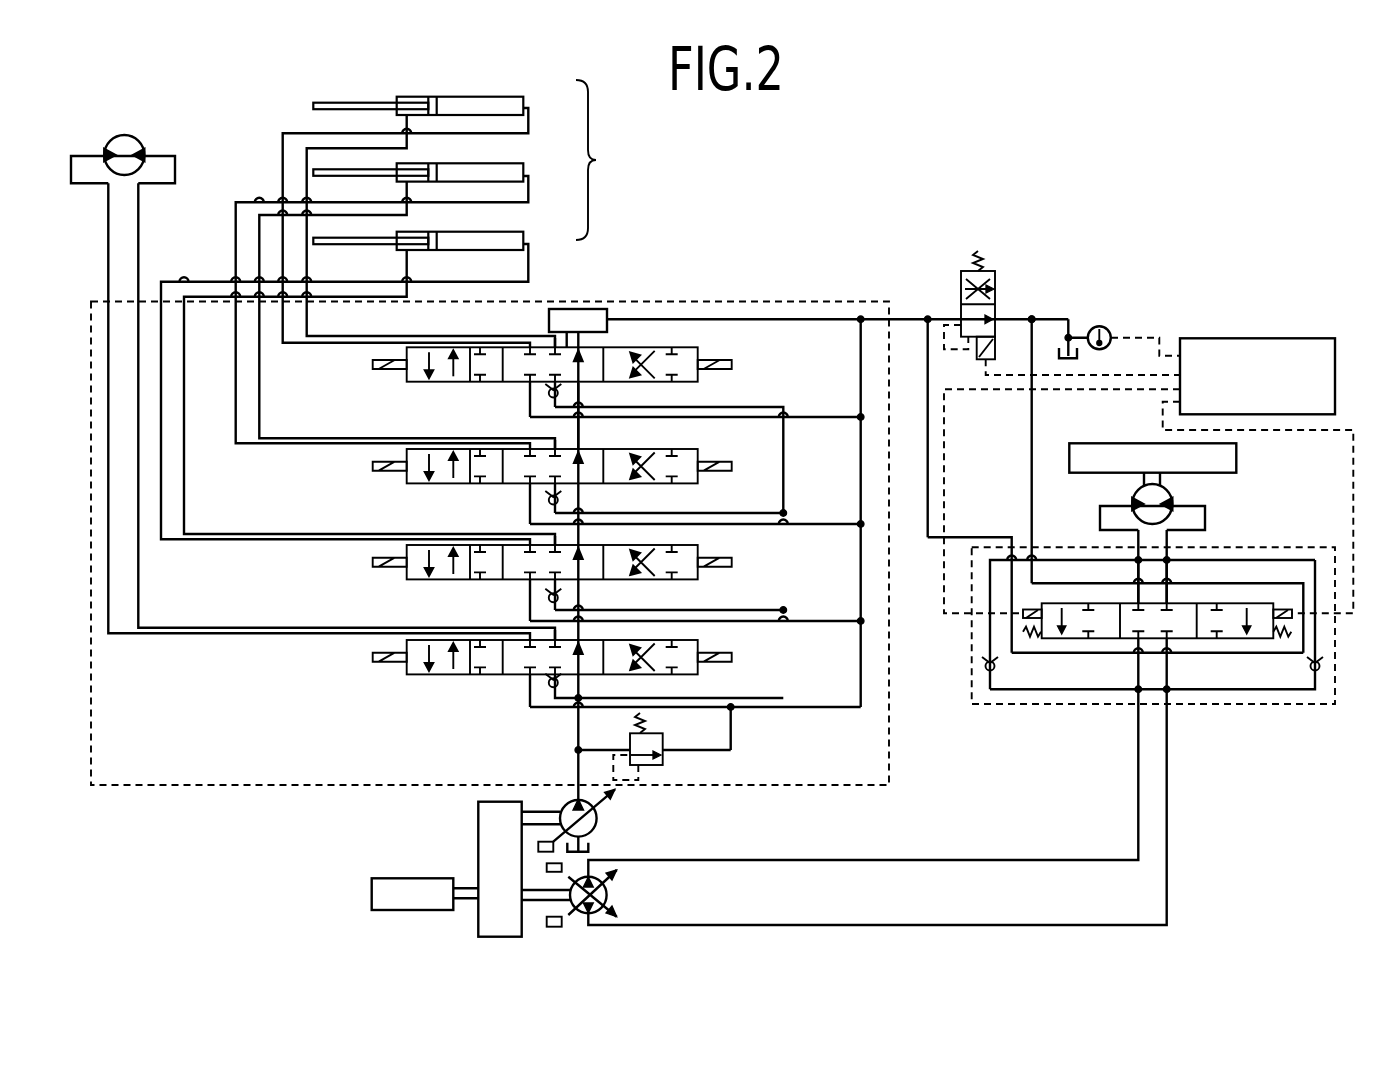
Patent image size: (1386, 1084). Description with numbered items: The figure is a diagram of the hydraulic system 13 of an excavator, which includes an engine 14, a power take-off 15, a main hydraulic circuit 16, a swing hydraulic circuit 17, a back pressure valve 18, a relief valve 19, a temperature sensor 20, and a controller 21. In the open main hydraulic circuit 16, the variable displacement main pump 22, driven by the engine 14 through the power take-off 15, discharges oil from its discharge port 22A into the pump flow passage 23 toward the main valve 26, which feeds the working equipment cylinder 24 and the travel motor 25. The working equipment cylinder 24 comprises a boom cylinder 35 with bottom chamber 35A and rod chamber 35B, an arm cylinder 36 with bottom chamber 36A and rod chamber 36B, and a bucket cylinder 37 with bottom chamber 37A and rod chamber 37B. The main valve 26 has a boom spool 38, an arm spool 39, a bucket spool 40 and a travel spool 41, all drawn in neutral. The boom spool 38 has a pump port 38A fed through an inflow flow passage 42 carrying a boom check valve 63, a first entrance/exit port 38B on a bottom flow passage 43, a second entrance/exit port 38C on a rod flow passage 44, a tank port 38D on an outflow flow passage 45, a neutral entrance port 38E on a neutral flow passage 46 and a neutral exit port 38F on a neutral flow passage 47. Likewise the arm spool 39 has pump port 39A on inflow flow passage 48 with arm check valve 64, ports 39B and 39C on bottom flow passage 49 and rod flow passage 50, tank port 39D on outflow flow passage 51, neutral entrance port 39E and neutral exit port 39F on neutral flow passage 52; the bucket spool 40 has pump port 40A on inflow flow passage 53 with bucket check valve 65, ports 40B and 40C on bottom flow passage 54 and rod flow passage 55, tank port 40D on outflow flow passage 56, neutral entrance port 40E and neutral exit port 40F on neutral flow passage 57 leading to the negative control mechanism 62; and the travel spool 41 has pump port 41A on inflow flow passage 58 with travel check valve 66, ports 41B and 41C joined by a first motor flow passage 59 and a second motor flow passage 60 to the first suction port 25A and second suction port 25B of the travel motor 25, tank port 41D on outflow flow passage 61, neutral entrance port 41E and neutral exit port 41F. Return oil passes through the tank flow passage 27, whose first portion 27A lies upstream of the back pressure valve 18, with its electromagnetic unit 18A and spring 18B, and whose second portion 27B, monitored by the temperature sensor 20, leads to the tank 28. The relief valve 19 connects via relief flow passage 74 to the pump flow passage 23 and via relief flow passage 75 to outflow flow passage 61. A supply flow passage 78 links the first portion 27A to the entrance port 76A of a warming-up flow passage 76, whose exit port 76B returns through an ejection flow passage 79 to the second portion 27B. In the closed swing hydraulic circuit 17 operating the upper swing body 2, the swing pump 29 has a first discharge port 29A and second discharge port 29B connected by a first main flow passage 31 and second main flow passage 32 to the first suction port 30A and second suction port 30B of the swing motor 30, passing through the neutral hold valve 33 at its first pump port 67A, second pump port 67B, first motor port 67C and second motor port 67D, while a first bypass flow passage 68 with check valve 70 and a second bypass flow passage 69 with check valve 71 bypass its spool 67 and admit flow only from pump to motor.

The upper swing body 2 is at (1238, 459).
The hydraulic system 13 is at (992, 140).
The engine 14 is at (370, 892).
The power take-off 15 is at (477, 924).
The main hydraulic circuit 16 is at (742, 286).
The swing hydraulic circuit 17 is at (1188, 848).
The back pressure valve 18 is at (996, 276).
The electromagnetic unit 18A is at (980, 358).
The spring 18B is at (975, 253).
The relief valve 19 is at (663, 762).
The temperature sensor 20 is at (1099, 326).
The controller 21 is at (1274, 338).
The main pump 22 is at (597, 818).
The discharge port 22A is at (572, 801).
The pump flow passage 23 is at (577, 770).
The working equipment cylinder 24 is at (596, 160).
The travel motor 25 is at (125, 134).
The first suction port 25A is at (106, 150).
The second suction port 25B is at (142, 150).
The main valve 26 is at (816, 298).
The tank flow passage 27 is at (939, 316).
The first portion 27A is at (926, 315).
The second portion 27B is at (1032, 316).
The tank 28 is at (589, 848).
The swing pump 29 is at (581, 918).
The first discharge port 29A is at (600, 872).
The second discharge port 29B is at (598, 925).
The swing motor 30 is at (1166, 490).
The first suction port 30A is at (1133, 507).
The second suction port 30B is at (1172, 507).
The first main flow passage 31 is at (1137, 744).
The second main flow passage 32 is at (1167, 744).
The neutral hold valve 33 is at (1295, 545).
The boom cylinder 35 is at (524, 236).
The bottom chamber 35A is at (480, 232).
The rod chamber 35B is at (422, 232).
The arm cylinder 36 is at (524, 168).
The bottom chamber 36A is at (480, 165).
The rod chamber 36B is at (422, 165).
The bucket cylinder 37 is at (524, 102).
The bottom chamber 37A is at (480, 99).
The rod chamber 37B is at (422, 99).
The boom spool 38 is at (707, 552).
The pump port 38A is at (569, 583).
The first entrance/exit port 38B is at (522, 540).
The second entrance/exit port 38C is at (526, 553).
The tank port 38D is at (526, 584).
The neutral entrance port 38E is at (588, 582).
The neutral exit port 38F is at (612, 571).
The arm spool 39 is at (698, 456).
The pump port 39A is at (569, 490).
The first entrance/exit port 39B is at (522, 444).
The second entrance/exit port 39C is at (526, 456).
The tank port 39D is at (526, 487).
The neutral entrance port 39E is at (588, 489).
The neutral exit port 39F is at (612, 476).
The bucket spool 40 is at (698, 355).
The pump port 40A is at (570, 389).
The first entrance/exit port 40B is at (551, 342).
The second entrance/exit port 40C is at (563, 308).
The tank port 40D is at (526, 385).
The neutral entrance port 40E is at (592, 385).
The neutral exit port 40F is at (590, 349).
The travel spool 41 is at (709, 650).
The pump port 41A is at (542, 691).
The first entrance/exit port 41B is at (551, 637).
The second entrance/exit port 41C is at (553, 659).
The tank port 41D is at (530, 676).
The neutral entrance port 41E is at (579, 674).
The neutral exit port 41F is at (612, 664).
The inflow flow passage 42 is at (770, 609).
The bottom flow passage 43 is at (205, 542).
The rod flow passage 44 is at (233, 531).
The outflow flow passage 45 is at (827, 618).
The neutral flow passage 46 is at (631, 644).
The neutral flow passage 47 is at (631, 547).
The inflow flow passage 48 is at (770, 512).
The bottom flow passage 49 is at (248, 446).
The rod flow passage 50 is at (296, 435).
The outflow flow passage 51 is at (827, 523).
The neutral flow passage 52 is at (584, 440).
The inflow flow passage 53 is at (770, 405).
The bottom flow passage 54 is at (309, 346).
The rod flow passage 55 is at (350, 336).
The outflow flow passage 56 is at (827, 415).
The neutral flow passage 57 is at (613, 316).
The inflow flow passage 58 is at (576, 712).
The first motor flow passage 59 is at (158, 636).
The second motor flow passage 60 is at (188, 625).
The outflow flow passage 61 is at (827, 700).
The negative control mechanism 62 is at (587, 308).
The boom check valve 63 is at (543, 596).
The arm check valve 64 is at (546, 500).
The bucket check valve 65 is at (542, 396).
The travel check valve 66 is at (542, 702).
The spool 67 is at (1274, 612).
The first pump port 67A is at (1137, 652).
The second pump port 67B is at (1168, 652).
The first motor port 67C is at (1137, 593).
The second motor port 67D is at (1168, 593).
The first bypass flow passage 68 is at (1021, 630).
The second bypass flow passage 69 is at (1292, 630).
The check valve 70 is at (983, 668).
The check valve 71 is at (1322, 668).
The relief flow passage 74 is at (614, 752).
The relief flow passage 75 is at (731, 731).
The warming-up flow passage 76 is at (1033, 653).
The entrance port 76A is at (1011, 547).
The exit port 76B is at (1032, 545).
The supply flow passage 78 is at (926, 436).
The ejection flow passage 79 is at (1034, 423).